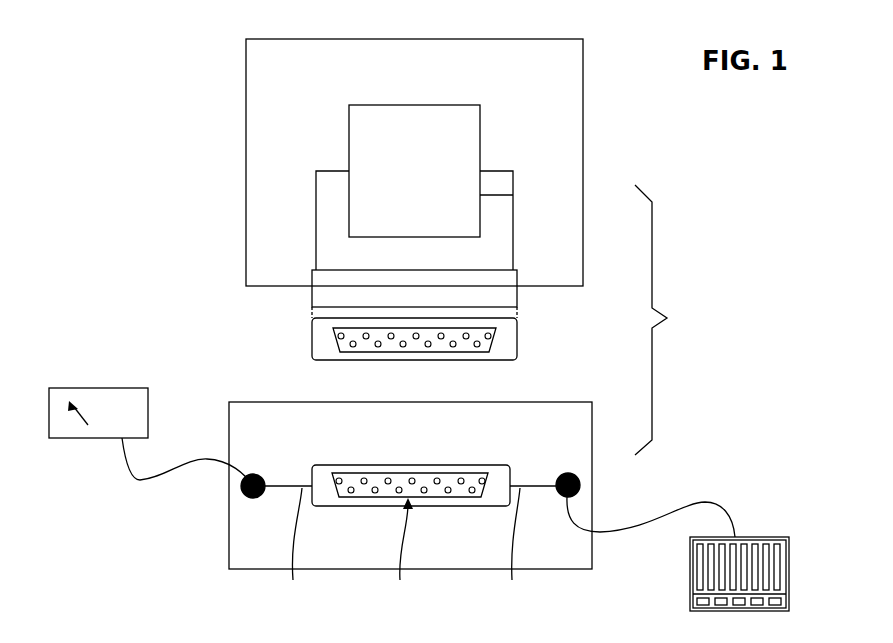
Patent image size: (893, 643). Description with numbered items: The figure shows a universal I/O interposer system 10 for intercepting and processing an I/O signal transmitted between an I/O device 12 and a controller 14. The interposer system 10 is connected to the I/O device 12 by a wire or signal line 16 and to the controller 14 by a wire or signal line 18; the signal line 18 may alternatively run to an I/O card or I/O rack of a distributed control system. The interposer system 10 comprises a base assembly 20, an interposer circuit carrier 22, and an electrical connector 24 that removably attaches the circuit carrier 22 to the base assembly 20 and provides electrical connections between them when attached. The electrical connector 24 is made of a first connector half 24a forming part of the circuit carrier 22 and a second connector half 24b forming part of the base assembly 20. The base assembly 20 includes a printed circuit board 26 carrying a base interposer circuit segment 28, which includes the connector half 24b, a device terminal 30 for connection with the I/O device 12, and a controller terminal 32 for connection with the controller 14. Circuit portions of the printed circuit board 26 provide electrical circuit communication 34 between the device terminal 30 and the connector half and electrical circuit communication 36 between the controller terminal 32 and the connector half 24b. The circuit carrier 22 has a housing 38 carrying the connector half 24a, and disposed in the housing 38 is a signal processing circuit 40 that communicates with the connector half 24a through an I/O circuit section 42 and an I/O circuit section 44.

The universal I/O interposer system 10 is at (667, 320).
The I/O device 12 is at (97, 388).
The controller 14 is at (789, 563).
The signal line 16 is at (140, 480).
The signal line 18 is at (722, 503).
The base assembly 20 is at (557, 578).
The interposer circuit carrier 22 is at (240, 123).
The electrical connector 24 is at (306, 327).
The first connector half 24a is at (517, 340).
The second connector half 24b is at (358, 472).
The printed circuit board 26 is at (518, 433).
The base interposer circuit segment 28 is at (401, 557).
The device terminal 30 is at (243, 492).
The controller terminal 32 is at (580, 490).
The electrical circuit communication 34 is at (291, 548).
The electrical circuit communication 36 is at (516, 548).
The housing 38 is at (483, 39).
The signal processing circuit 40 is at (480, 120).
The I/O circuit section 42 is at (316, 200).
The I/O circuit section 44 is at (513, 195).